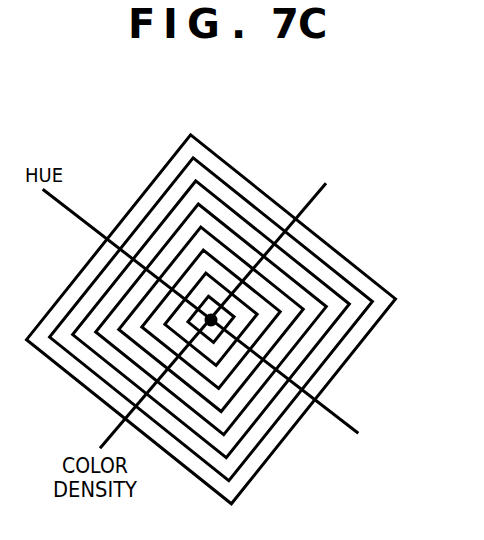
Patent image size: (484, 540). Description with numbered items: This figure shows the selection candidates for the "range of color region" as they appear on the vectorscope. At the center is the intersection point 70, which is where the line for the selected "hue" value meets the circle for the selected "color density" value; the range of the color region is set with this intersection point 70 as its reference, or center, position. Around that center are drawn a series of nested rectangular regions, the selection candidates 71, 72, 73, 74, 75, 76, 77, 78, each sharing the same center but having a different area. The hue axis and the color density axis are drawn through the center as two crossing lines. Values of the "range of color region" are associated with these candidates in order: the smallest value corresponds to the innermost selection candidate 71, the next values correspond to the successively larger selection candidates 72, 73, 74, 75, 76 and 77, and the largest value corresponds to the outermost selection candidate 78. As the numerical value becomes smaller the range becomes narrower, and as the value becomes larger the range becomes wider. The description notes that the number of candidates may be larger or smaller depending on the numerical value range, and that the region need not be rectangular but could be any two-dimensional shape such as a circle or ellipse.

The intersection point 70 is at (200, 317).
The selection candidate 71 is at (200, 302).
The selection candidate 72 is at (200, 275).
The selection candidate 73 is at (210, 250).
The selection candidate 74 is at (230, 249).
The selection candidate 75 is at (250, 238).
The selection candidate 76 is at (265, 233).
The selection candidate 77 is at (298, 237).
The selection candidate 78 is at (352, 255).